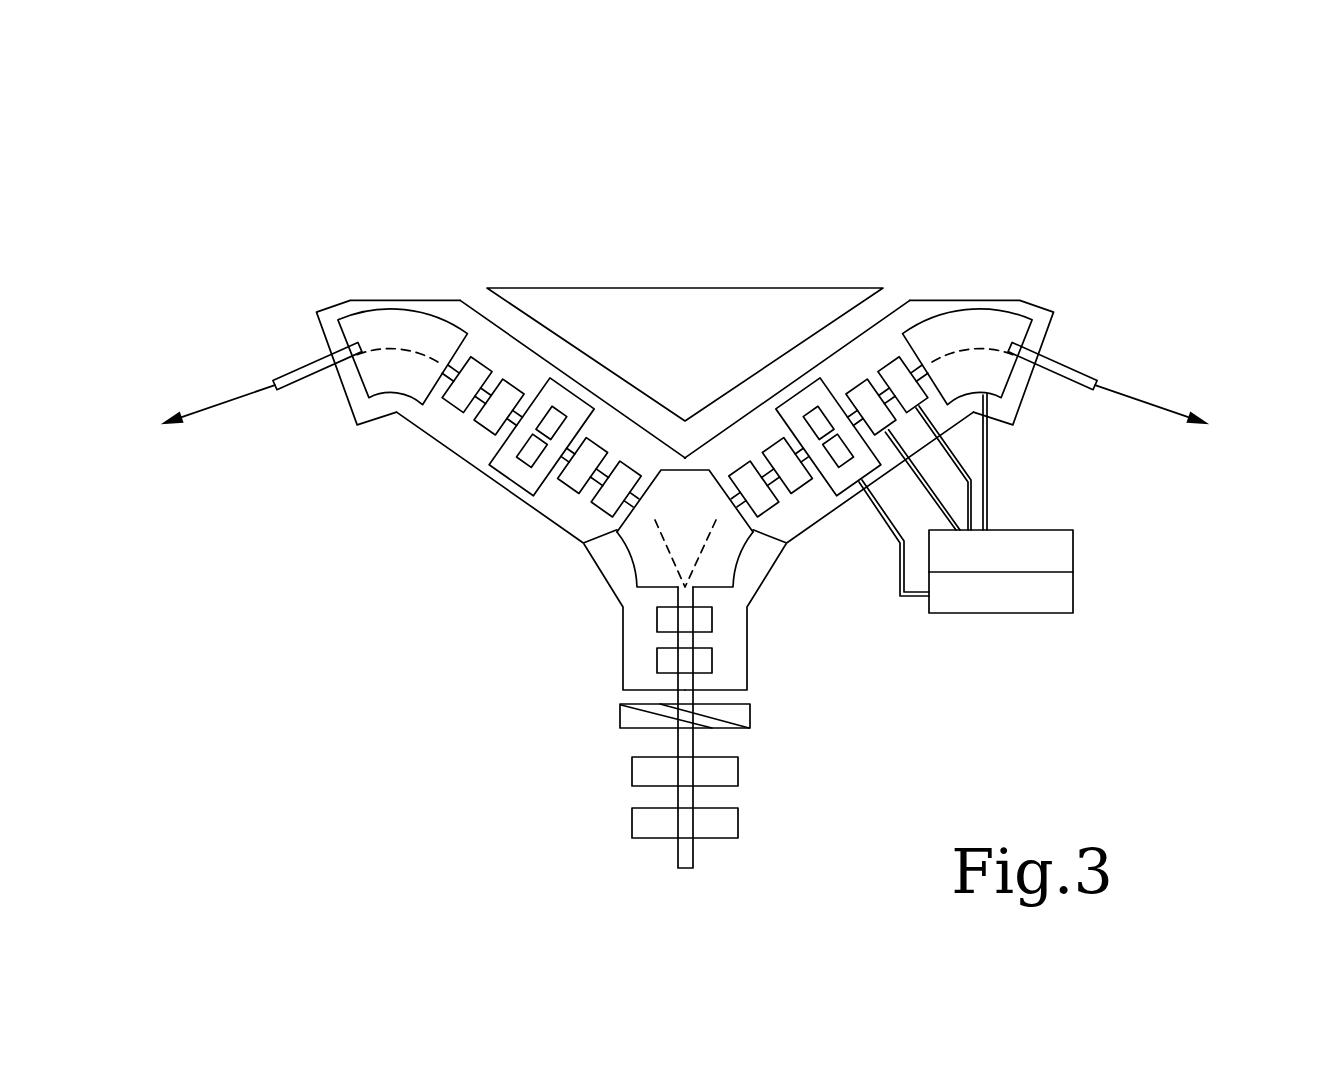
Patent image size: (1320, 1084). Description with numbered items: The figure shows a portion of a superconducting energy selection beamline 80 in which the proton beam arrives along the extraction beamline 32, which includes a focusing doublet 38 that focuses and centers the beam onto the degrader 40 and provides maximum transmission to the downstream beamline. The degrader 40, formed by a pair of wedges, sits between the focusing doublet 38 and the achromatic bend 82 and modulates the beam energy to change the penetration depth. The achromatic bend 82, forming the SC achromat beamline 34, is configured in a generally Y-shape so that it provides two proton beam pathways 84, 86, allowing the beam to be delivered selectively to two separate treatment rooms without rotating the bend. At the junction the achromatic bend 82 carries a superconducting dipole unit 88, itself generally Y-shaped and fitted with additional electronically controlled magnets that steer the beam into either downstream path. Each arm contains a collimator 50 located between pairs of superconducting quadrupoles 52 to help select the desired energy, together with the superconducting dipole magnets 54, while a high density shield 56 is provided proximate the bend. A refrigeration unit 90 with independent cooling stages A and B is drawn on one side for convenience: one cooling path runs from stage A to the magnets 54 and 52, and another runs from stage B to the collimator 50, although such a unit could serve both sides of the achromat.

The superconducting energy selection beamline 80 is at (238, 173).
The superconducting dipole magnets 54 is at (397, 312).
The proton beam pathway 84 is at (229, 401).
The high density shield 56 is at (507, 288).
The collimator 50 is at (572, 397).
The superconducting quadrupoles 52 is at (736, 475).
The proton beam pathway 86 is at (1143, 401).
The superconducting dipole unit 88 is at (587, 546).
The SC achromat beamline 34 is at (481, 571).
The achromatic bend 82 is at (747, 606).
The refrigeration unit 90 is at (1073, 572).
The degrader 40 is at (713, 729).
The focusing doublet 38 is at (632, 770).
The extraction beamline 32 is at (783, 815).